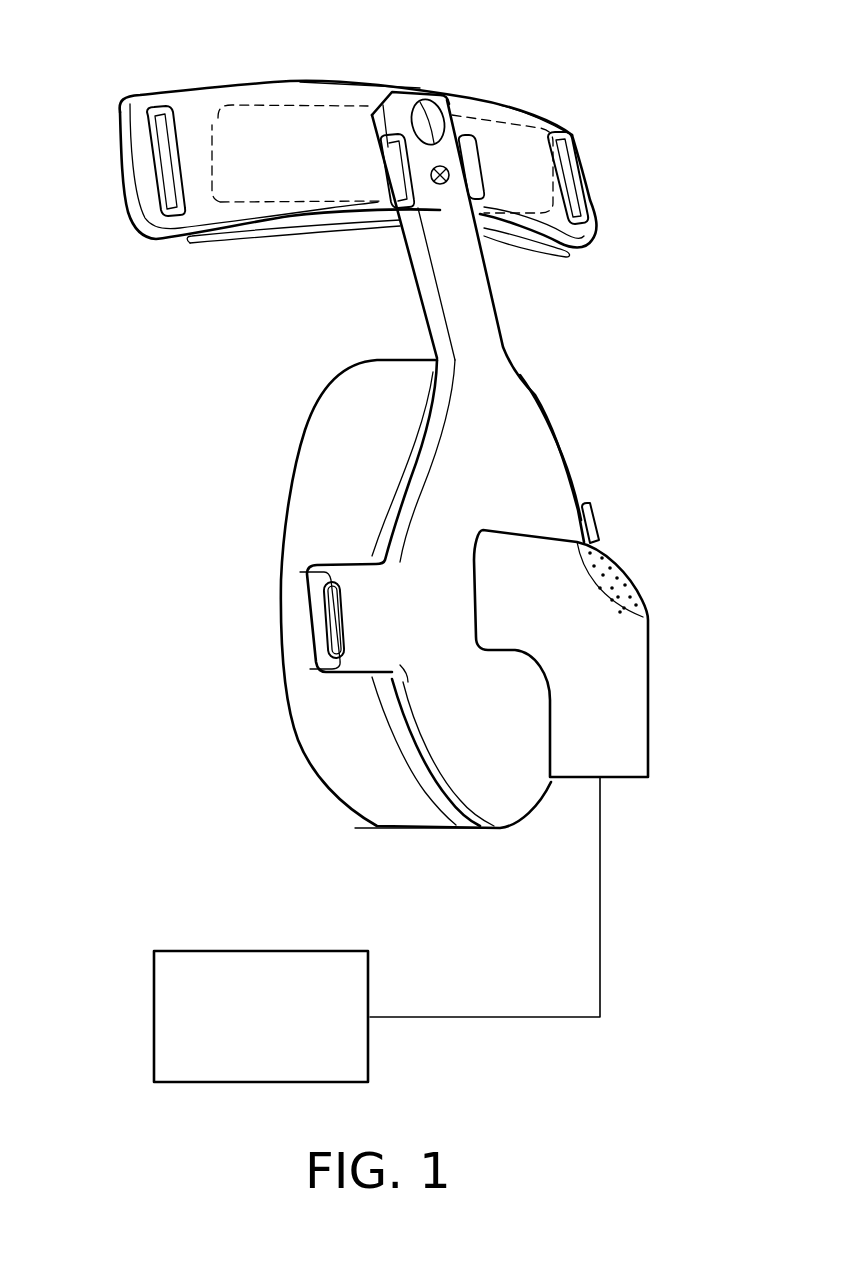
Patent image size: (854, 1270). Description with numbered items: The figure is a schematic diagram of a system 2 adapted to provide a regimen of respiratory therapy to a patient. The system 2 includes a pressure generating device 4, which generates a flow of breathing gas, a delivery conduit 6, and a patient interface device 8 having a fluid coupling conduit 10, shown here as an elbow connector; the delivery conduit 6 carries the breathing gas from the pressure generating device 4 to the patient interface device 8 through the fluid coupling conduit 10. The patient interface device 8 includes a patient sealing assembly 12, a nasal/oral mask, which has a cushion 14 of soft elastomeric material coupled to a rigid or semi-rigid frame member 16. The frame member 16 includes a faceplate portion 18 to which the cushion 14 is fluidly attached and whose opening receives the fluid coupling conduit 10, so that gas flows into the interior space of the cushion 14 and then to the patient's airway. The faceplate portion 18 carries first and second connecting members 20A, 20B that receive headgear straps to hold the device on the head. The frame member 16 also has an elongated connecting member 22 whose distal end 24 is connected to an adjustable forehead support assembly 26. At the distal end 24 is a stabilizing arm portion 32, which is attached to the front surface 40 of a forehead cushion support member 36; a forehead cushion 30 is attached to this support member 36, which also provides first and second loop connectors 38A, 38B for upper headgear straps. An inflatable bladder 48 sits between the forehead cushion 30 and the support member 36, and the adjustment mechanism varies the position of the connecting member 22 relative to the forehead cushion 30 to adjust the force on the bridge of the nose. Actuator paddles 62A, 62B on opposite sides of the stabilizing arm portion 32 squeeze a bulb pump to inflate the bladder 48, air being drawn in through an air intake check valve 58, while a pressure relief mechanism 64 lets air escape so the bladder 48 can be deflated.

The system 2 is at (95, 485).
The pressure generating device 4 is at (249, 950).
The delivery conduit 6 is at (600, 890).
The patient interface device 8 is at (575, 437).
The fluid coupling conduit 10 is at (612, 700).
The patient sealing assembly 12 is at (415, 833).
The cushion 14 is at (313, 482).
The frame member 16 is at (530, 392).
The faceplate portion 18 is at (530, 515).
The first connecting member 20A is at (325, 577).
The second connecting member 20B is at (590, 525).
The elongated connecting member 22 is at (487, 310).
The distal end 24 is at (447, 207).
The adjustable forehead support assembly 26 is at (470, 90).
The forehead cushion 30 is at (298, 235).
The stabilizing arm portion 32 is at (383, 110).
The forehead cushion support member 36 is at (190, 106).
The first loop connector 38A is at (150, 117).
The second loop connector 38B is at (560, 143).
The front surface 40 is at (535, 125).
The bladder 48 is at (252, 118).
The air intake check valve 58 is at (450, 178).
The actuator paddle 62A is at (396, 152).
The actuator paddle 62B is at (456, 172).
The pressure relief mechanism 64 is at (427, 110).